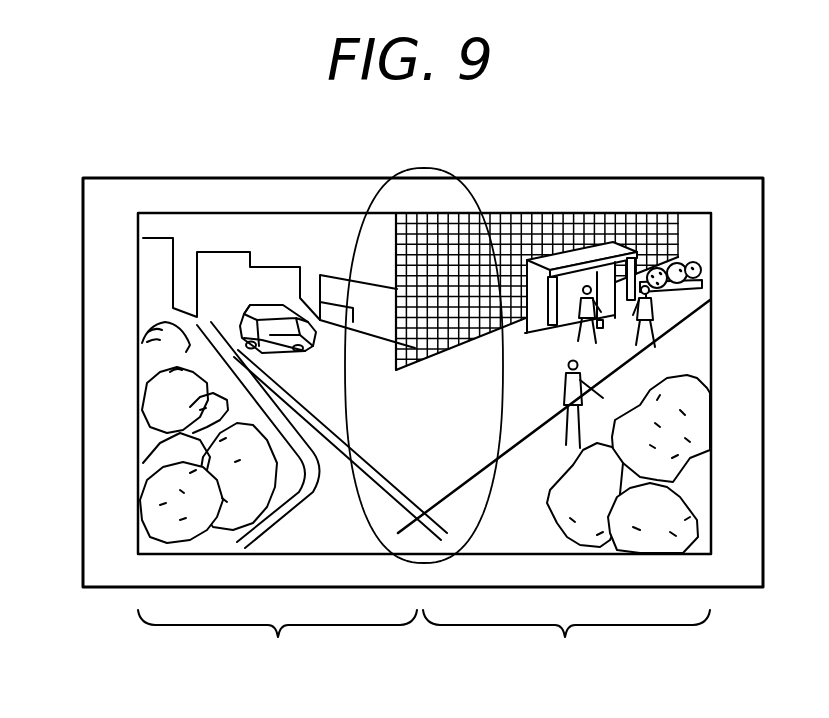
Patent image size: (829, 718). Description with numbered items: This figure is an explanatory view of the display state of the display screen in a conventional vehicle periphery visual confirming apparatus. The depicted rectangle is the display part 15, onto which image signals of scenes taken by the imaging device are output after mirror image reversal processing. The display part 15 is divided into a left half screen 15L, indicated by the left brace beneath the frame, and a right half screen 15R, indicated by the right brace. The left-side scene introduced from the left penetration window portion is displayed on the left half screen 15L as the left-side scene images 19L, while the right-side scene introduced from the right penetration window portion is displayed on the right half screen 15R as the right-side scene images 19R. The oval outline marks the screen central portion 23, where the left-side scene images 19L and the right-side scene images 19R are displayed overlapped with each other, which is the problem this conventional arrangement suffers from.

The display part 15 is at (82, 147).
The left half screen 15L is at (277, 640).
The right half screen 15R is at (566, 640).
The left-side scene images 19L is at (300, 228).
The right-side scene images 19R is at (527, 218).
The screen central portion 23 is at (437, 171).